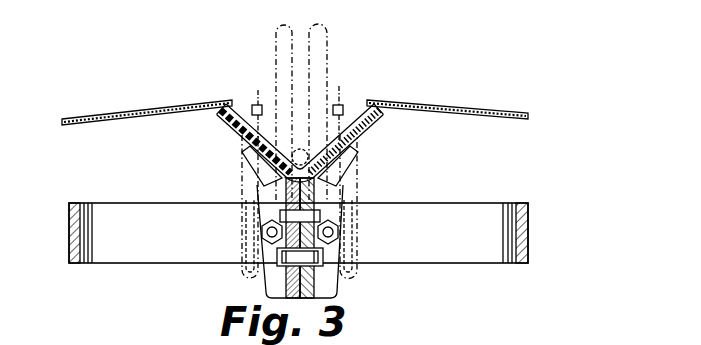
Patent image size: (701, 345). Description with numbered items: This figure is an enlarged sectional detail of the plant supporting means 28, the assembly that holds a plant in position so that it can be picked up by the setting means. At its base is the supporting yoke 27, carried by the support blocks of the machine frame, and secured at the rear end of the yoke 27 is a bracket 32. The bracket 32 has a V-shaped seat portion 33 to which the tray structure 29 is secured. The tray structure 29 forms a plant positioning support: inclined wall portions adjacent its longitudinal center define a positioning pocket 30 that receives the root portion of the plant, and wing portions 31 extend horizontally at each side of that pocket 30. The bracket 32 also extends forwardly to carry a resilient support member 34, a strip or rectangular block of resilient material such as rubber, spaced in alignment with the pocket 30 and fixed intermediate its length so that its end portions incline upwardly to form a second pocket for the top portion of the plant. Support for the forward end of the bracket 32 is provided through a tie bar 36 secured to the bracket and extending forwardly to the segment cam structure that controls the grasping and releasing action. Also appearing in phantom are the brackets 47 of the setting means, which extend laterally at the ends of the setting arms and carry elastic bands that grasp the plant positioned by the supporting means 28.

The supporting yoke 27 is at (528, 228).
The plant supporting means 28 is at (535, 113).
The tray structure 29 is at (231, 102).
The positioning pocket 30 is at (360, 101).
The wing portions 31 is at (149, 114).
The bracket 32 is at (272, 286).
The V-shaped seat portion 33 is at (345, 173).
The resilient support member 34 is at (392, 131).
The tie bar 36 is at (318, 276).
The brackets 47 is at (274, 41).